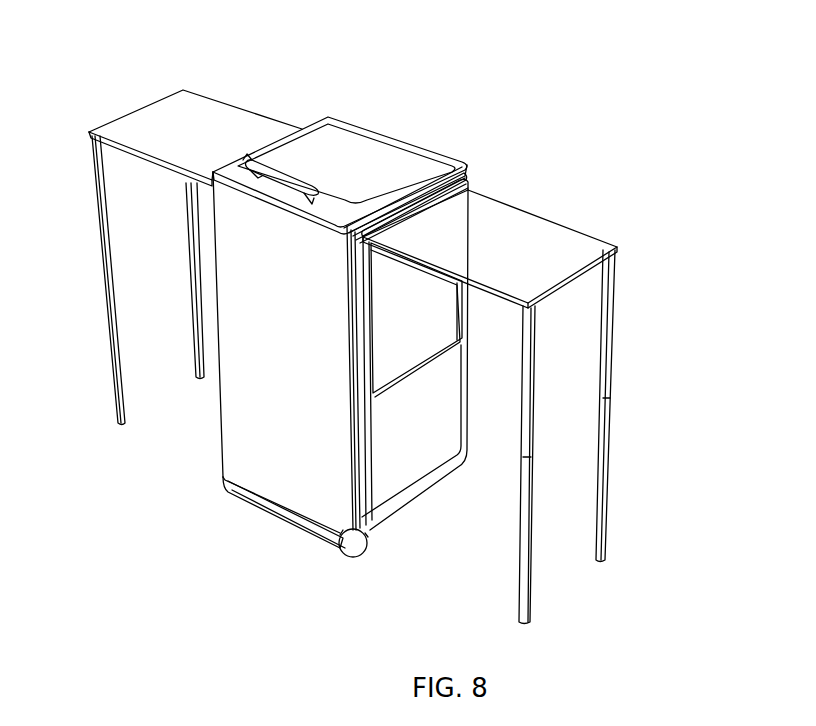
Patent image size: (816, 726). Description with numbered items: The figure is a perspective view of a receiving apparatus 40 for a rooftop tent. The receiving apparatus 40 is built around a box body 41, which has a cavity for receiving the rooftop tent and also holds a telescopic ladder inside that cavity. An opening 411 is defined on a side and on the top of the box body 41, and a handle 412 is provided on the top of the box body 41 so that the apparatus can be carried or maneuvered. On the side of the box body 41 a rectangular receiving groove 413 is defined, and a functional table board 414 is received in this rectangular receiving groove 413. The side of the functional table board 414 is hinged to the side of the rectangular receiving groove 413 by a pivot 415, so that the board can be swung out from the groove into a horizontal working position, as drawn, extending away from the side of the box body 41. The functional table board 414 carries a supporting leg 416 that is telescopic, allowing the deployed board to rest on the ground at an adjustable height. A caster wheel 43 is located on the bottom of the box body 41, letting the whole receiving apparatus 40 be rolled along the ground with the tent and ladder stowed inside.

The receiving apparatus 40 is at (404, 103).
The box body 41 is at (267, 363).
The caster wheel 43 is at (343, 552).
The opening 411 is at (347, 142).
The handle 412 is at (287, 168).
The rectangular receiving groove 413 is at (410, 327).
The functional table board 414 is at (527, 233).
The pivot 415 is at (470, 189).
The supporting leg 416 is at (610, 375).